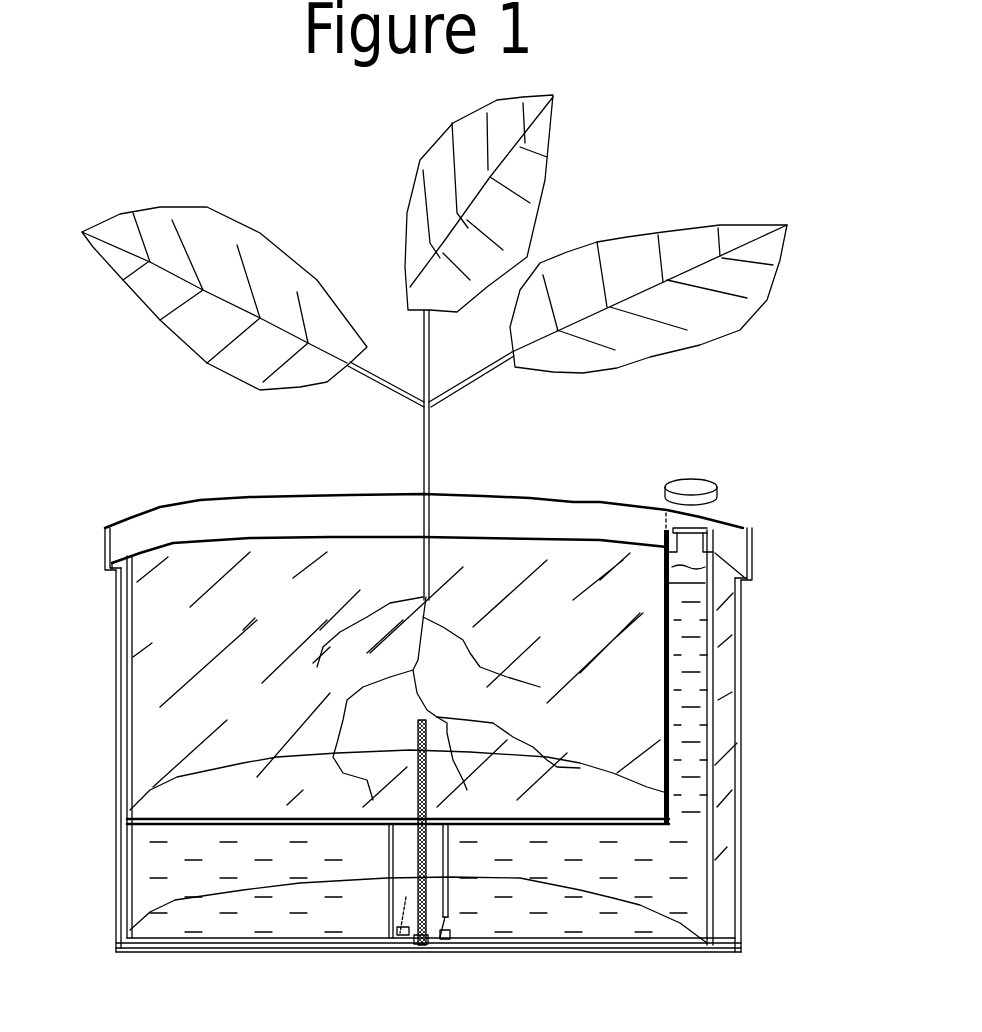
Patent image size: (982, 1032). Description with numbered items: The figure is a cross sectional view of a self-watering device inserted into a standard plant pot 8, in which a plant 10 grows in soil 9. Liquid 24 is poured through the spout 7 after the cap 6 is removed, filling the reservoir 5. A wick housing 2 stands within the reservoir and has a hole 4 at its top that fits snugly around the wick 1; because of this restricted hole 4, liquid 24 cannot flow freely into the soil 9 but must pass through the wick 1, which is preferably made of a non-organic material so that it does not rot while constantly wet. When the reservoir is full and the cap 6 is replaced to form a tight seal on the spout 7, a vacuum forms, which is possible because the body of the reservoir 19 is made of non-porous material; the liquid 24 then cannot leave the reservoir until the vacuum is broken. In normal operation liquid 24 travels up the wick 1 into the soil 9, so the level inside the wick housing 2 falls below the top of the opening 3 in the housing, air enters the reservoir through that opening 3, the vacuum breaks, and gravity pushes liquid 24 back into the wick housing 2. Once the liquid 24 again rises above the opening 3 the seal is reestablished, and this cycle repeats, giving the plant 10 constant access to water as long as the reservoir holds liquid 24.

The wick 1 is at (427, 943).
The wick housing 2 is at (405, 928).
The opening 3 is at (443, 933).
The hole 4 is at (413, 822).
The reservoir 5 is at (698, 568).
The cap 6 is at (717, 483).
The spout 7 is at (710, 527).
The plant pot 8 is at (745, 593).
The soil 9 is at (170, 620).
The plant 10 is at (435, 451).
The body of the reservoir 19 is at (738, 743).
The liquid 24 is at (622, 870).